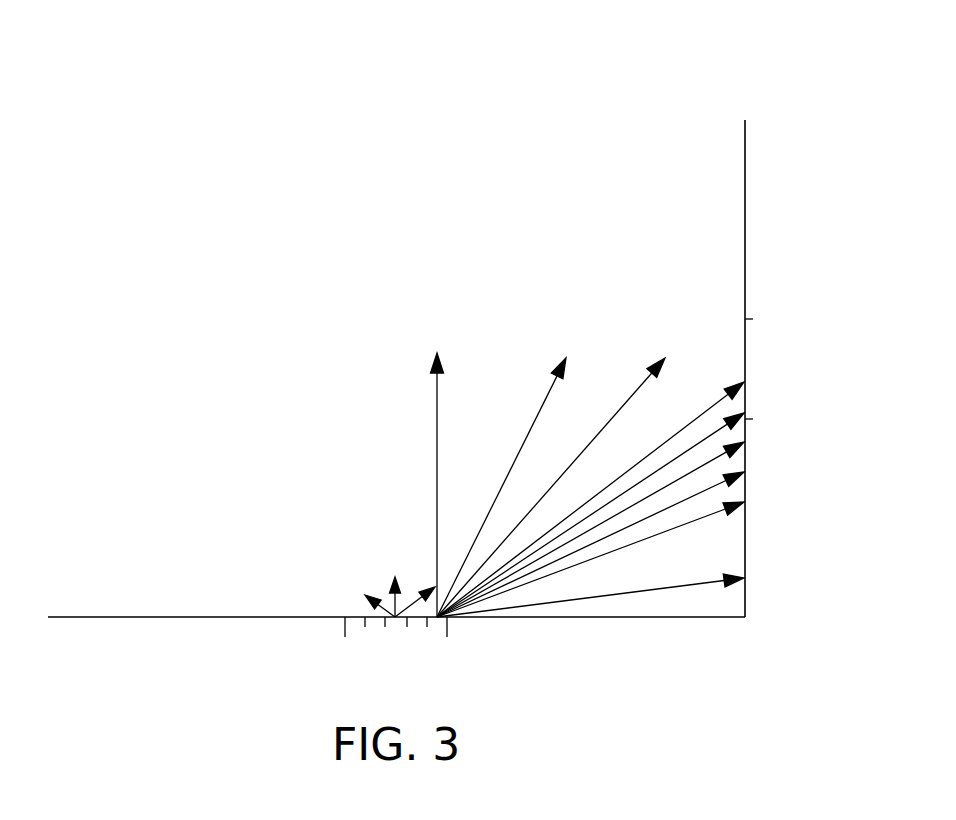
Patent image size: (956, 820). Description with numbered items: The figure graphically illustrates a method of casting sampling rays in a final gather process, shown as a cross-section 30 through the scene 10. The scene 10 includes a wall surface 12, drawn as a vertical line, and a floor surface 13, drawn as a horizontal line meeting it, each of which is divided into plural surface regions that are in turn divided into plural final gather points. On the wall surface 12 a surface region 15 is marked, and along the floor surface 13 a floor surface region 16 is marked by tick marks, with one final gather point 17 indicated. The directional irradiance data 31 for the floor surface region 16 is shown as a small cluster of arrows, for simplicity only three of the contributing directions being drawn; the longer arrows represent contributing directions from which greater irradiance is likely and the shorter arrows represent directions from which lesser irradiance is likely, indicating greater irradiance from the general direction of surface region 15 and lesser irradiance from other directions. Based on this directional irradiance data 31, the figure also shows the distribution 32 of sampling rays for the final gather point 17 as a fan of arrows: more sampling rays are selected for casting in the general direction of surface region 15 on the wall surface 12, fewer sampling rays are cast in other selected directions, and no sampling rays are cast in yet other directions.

The scene 10 is at (547, 75).
The wall surface 12 is at (768, 235).
The floor surface 13 is at (142, 641).
The surface region 15 is at (767, 373).
The floor surface region 16 is at (370, 656).
The final gather point 17 is at (442, 637).
The cross-section 30 is at (648, 651).
The directional irradiance data 31 is at (384, 562).
The distribution of sampling rays 32 is at (599, 357).